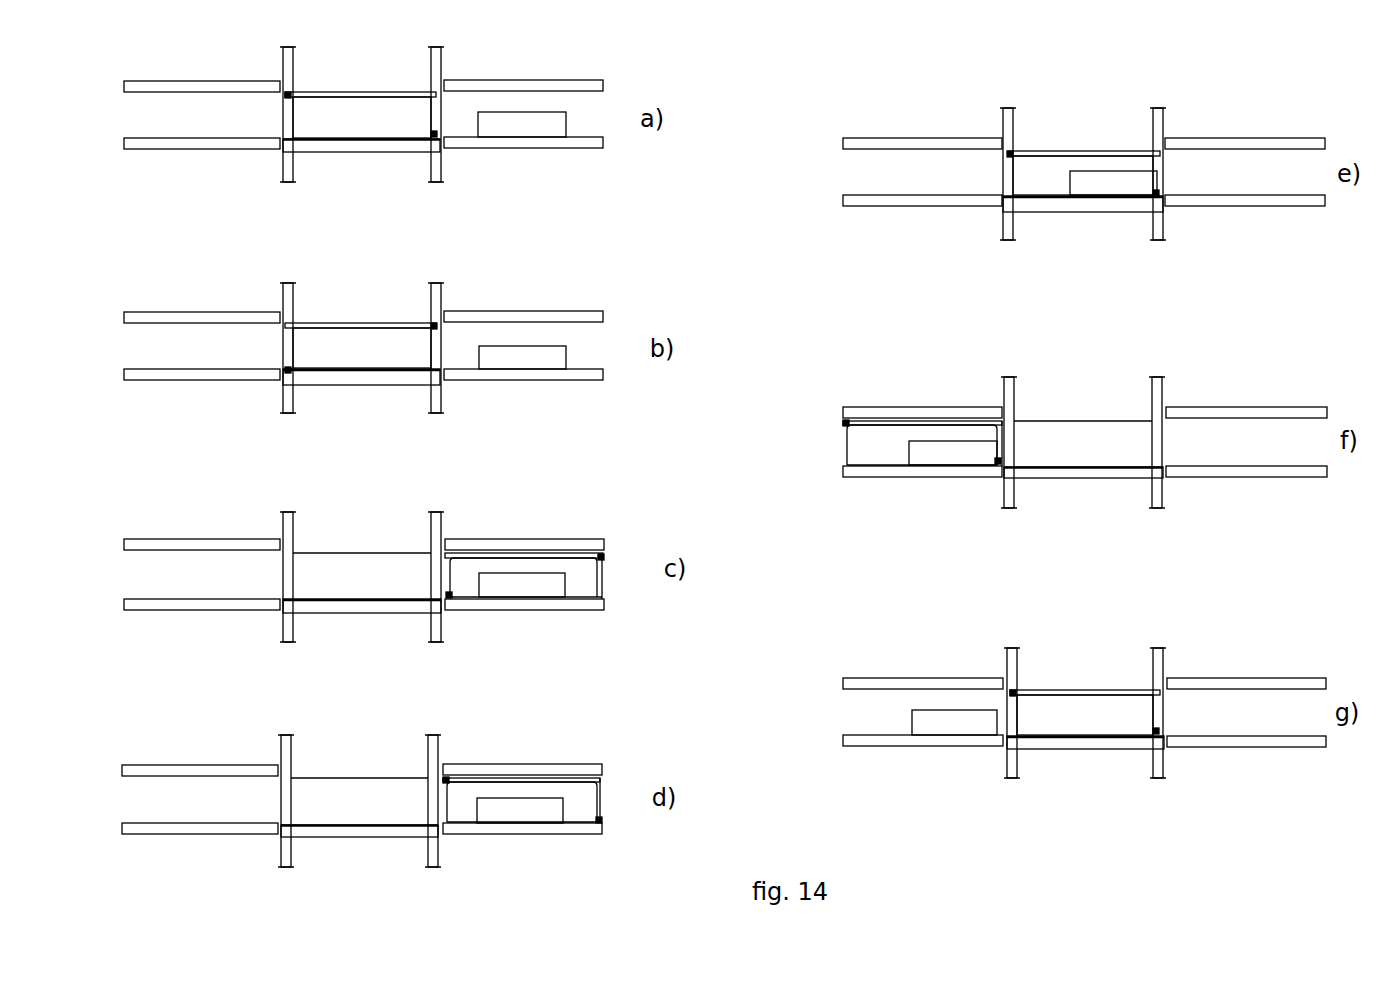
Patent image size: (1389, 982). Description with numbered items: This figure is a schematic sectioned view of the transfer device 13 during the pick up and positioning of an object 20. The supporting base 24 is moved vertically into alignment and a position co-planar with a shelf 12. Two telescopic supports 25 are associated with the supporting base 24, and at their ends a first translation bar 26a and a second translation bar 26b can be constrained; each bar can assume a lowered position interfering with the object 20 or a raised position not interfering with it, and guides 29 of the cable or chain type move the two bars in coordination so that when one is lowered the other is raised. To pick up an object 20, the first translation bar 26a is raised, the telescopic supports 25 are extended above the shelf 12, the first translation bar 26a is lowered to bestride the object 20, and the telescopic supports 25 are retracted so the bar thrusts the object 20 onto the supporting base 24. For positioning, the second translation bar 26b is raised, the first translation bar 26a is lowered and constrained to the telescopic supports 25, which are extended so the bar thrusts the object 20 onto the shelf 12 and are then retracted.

The shelf 12 is at (510, 147).
The transfer device 13 is at (326, 163).
The object 20 is at (556, 122).
The supporting base 24 is at (358, 152).
The telescopic support 25 is at (585, 604).
The first translation bar 26a is at (435, 131).
The second translation bar 26b is at (290, 93).
The guide 29 is at (370, 93).